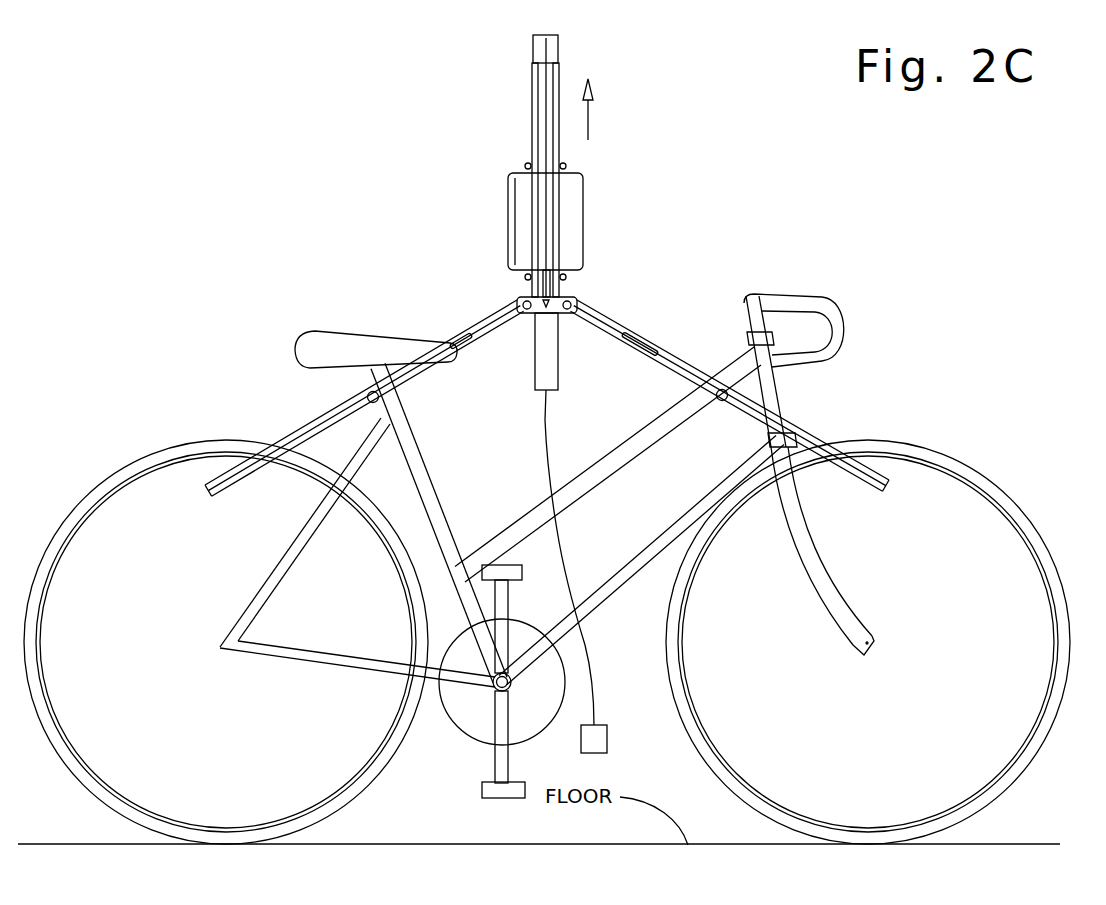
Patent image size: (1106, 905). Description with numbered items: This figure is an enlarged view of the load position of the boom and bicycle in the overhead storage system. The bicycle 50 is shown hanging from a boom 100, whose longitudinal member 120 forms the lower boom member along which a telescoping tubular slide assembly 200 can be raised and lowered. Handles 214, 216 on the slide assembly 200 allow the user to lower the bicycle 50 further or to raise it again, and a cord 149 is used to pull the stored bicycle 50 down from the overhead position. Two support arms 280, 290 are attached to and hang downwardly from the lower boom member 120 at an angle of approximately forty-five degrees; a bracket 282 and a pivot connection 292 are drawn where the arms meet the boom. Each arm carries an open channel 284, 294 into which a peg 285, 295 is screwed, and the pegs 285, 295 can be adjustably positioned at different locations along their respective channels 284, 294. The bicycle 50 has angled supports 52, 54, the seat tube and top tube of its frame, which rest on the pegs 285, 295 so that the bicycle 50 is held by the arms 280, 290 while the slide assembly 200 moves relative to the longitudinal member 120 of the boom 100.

The boom 100 is at (533, 42).
The longitudinal member 120 is at (558, 46).
The telescoping tubular slide assembly 200 is at (532, 102).
The handle 216 is at (510, 177).
The handle 214 is at (583, 200).
The mounting bracket 282 is at (517, 300).
The pivot connection 292 is at (578, 300).
The support arm 280 is at (485, 318).
The open channel 284 is at (303, 427).
The support arm 290 is at (615, 322).
The open channel 294 is at (665, 350).
The peg 295 is at (722, 400).
The peg 285 is at (360, 366).
The angled support 52 is at (423, 460).
The angled support 54 is at (578, 470).
The cord 149 is at (557, 547).
The bicycle 50 is at (590, 657).